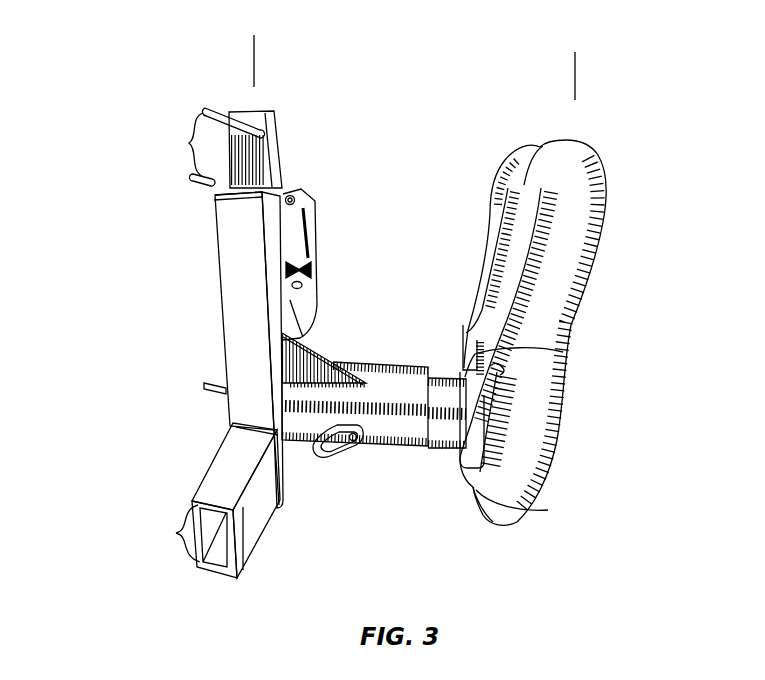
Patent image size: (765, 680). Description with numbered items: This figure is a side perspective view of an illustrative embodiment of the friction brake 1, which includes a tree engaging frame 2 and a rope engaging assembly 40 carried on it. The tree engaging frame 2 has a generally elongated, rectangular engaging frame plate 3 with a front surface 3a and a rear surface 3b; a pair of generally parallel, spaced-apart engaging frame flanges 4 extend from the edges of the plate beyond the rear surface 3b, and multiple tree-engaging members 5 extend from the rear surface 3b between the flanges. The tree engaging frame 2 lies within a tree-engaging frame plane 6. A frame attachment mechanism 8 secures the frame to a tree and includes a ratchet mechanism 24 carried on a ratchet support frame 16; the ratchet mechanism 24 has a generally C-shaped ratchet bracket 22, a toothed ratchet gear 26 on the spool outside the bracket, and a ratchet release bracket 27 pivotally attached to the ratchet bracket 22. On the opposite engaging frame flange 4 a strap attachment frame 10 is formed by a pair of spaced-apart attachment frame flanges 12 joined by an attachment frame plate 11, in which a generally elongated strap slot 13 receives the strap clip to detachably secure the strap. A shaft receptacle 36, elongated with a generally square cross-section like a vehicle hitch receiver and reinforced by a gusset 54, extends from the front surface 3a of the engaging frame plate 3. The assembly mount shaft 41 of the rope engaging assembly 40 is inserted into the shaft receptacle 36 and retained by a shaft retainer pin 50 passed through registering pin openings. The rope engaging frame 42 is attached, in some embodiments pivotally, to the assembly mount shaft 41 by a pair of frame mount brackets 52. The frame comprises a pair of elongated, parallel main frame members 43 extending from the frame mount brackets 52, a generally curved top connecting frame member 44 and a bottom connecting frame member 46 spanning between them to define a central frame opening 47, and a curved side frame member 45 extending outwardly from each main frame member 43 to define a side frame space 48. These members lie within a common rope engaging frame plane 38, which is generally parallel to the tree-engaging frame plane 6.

The friction brake 1 is at (205, 45).
The tree engaging frame 2 is at (290, 141).
The engaging frame plate 3 is at (279, 127).
The front surface 3a is at (270, 185).
The rear surface 3b is at (258, 158).
The engaging frame flanges 4 is at (232, 298).
The tree-engaging members 5 is at (189, 143).
The tree-engaging frame plane 6 is at (256, 60).
The frame attachment mechanism 8 is at (130, 578).
The strap attachment frame 10 is at (210, 457).
The attachment frame plate 11 is at (260, 507).
The attachment frame flanges 12 is at (176, 533).
The strap slot 13 is at (247, 528).
The ratchet support frame 16 is at (322, 303).
The ratchet bracket 22 is at (300, 256).
The ratchet mechanism 24 is at (352, 188).
The ratchet gear 26 is at (286, 206).
The ratchet release bracket 27 is at (316, 226).
The shaft receptacle 36 is at (396, 432).
The rope engaging frame plane 38 is at (577, 78).
The rope engaging assembly 40 is at (632, 145).
The assembly mount shaft 41 is at (440, 395).
The rope engaging frame 42 is at (605, 253).
The main frame members 43 is at (490, 278).
The top connecting frame member 44 is at (580, 196).
The side frame members 45 is at (507, 165).
The bottom connecting frame member 46 is at (563, 352).
The central frame opening 47 is at (526, 246).
The side frame space 48 is at (478, 208).
The shaft retainer pin 50 is at (335, 455).
The frame mount brackets 52 is at (463, 325).
The gusset 54 is at (307, 350).